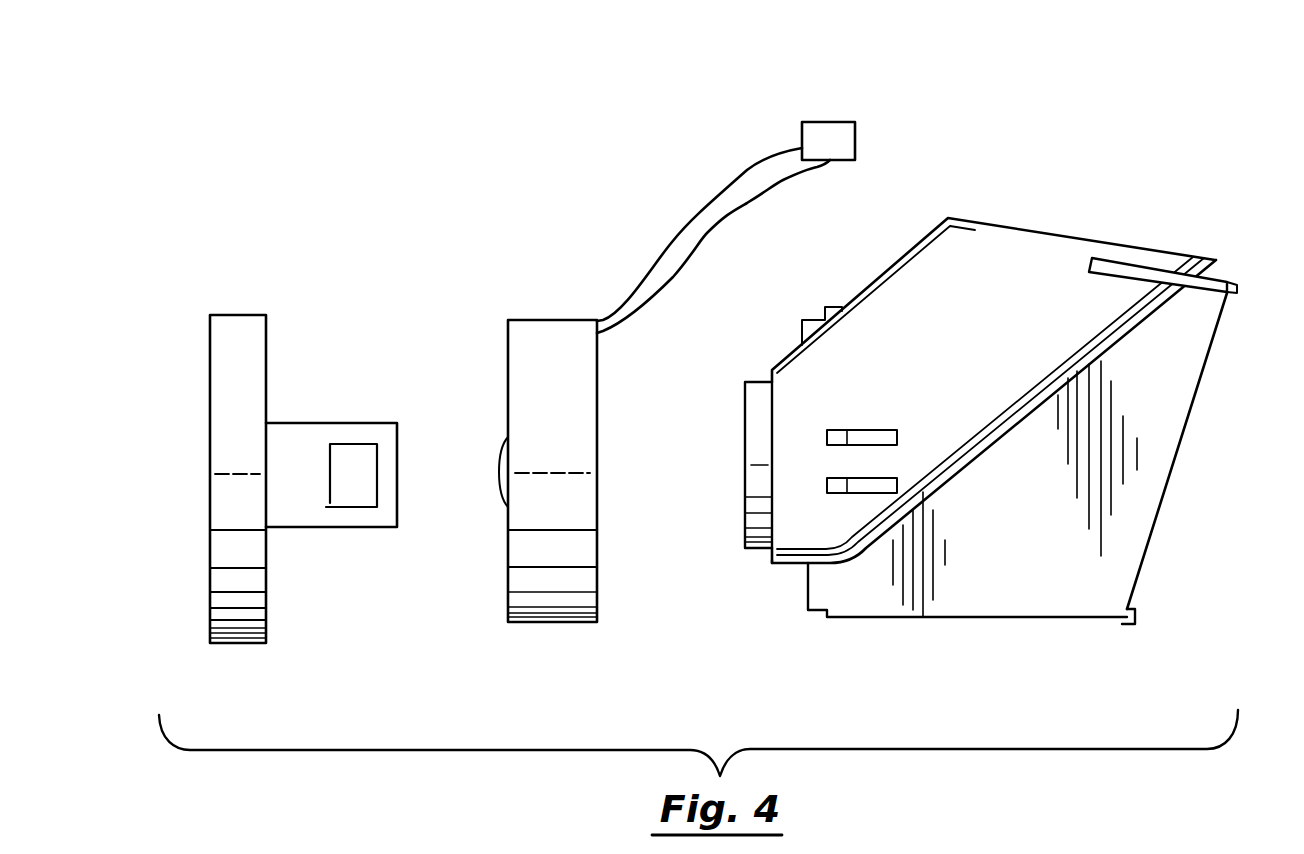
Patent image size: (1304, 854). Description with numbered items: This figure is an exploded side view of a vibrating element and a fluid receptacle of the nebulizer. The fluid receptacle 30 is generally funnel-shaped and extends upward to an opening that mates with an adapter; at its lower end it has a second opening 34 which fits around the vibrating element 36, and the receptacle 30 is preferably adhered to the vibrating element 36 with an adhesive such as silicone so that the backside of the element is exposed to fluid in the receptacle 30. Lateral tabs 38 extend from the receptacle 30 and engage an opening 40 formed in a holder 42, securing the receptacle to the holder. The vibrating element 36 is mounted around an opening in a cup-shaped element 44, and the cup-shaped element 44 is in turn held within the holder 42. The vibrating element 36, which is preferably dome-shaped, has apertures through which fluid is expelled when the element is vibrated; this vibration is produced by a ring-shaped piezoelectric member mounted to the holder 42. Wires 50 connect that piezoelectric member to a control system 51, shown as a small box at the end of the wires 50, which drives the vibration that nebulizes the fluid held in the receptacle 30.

The fluid receptacle 30 is at (982, 421).
The second opening 34 is at (745, 440).
The vibrating element 36 is at (562, 490).
The lateral tabs 38 is at (842, 437).
The opening 40 is at (353, 492).
The holder 42 is at (248, 641).
The cup-shaped element 44 is at (583, 598).
The wires 50 is at (690, 213).
The control system 51 is at (843, 131).